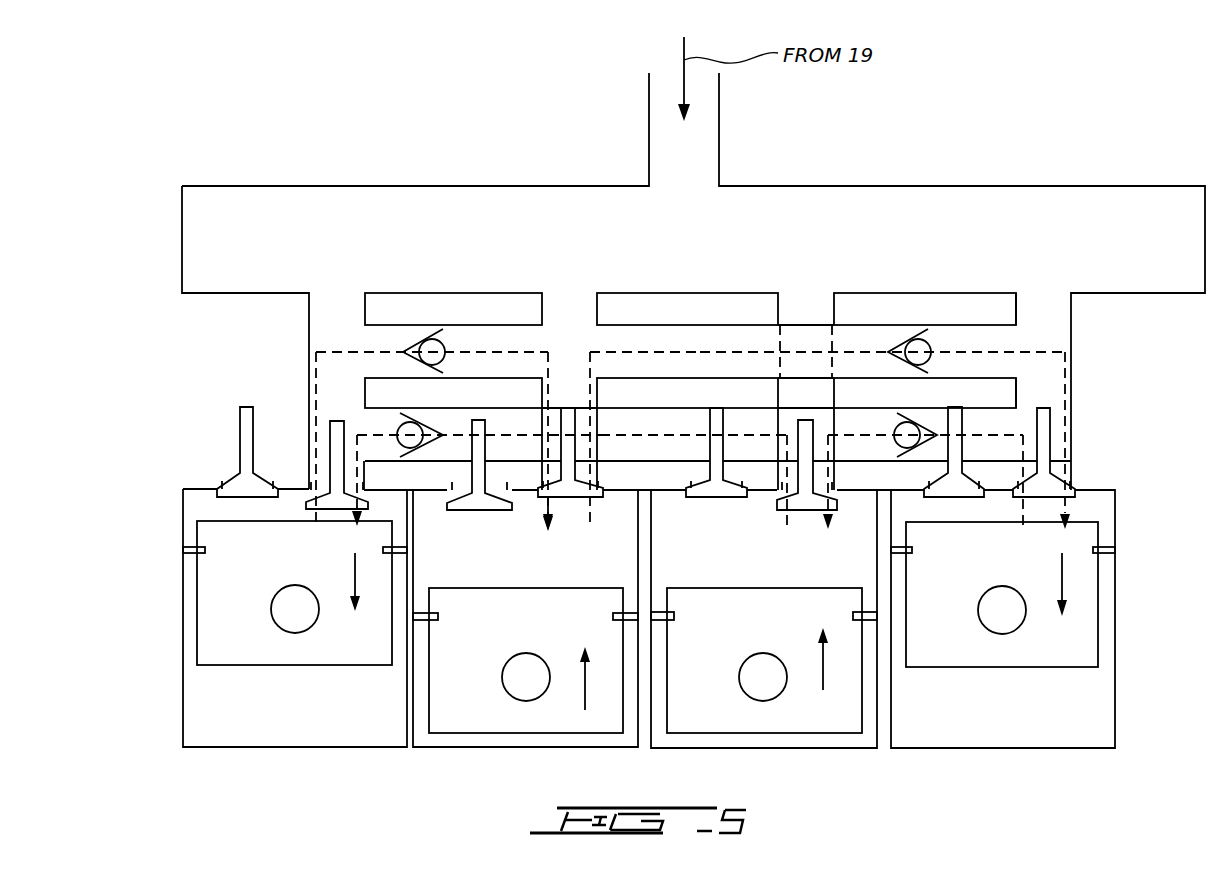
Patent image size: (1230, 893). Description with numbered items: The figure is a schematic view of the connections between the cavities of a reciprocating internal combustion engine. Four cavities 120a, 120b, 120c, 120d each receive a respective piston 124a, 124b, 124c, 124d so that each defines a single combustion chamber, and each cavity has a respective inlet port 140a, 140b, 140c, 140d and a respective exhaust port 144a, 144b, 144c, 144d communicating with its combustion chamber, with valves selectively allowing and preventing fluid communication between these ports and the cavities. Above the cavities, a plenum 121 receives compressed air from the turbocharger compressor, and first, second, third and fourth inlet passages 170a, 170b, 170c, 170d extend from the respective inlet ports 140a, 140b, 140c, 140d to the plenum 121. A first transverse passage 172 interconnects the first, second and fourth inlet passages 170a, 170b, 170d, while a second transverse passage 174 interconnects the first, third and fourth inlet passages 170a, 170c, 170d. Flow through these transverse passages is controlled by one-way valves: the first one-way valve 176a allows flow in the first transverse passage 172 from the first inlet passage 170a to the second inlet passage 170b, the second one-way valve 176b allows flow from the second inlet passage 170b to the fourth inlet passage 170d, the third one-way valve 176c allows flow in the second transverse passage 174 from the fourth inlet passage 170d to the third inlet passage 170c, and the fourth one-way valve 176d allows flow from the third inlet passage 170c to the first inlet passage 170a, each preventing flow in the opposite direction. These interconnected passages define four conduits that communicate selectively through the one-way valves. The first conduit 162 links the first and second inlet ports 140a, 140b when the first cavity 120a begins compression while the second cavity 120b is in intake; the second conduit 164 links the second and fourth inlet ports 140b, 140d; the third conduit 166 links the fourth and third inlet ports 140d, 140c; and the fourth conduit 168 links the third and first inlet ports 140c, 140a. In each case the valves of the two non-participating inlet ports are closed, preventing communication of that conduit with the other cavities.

The plenum 121 is at (716, 248).
The first inlet passage 170a is at (330, 303).
The second inlet passage 170b is at (569, 303).
The third inlet passage 170c is at (806, 303).
The fourth inlet passage 170d is at (1044, 303).
The first transverse passage 172 is at (985, 340).
The second transverse passage 174 is at (999, 422).
The first conduit 162 is at (317, 440).
The second conduit 164 is at (633, 352).
The third conduit 166 is at (870, 437).
The fourth conduit 168 is at (650, 435).
The first one-way valve 176a is at (432, 340).
The second one-way valve 176b is at (918, 340).
The third one-way valve 176c is at (910, 428).
The fourth one-way valve 176d is at (400, 430).
The first inlet port 140a is at (317, 488).
The second inlet port 140b is at (585, 478).
The third inlet port 140c is at (820, 487).
The fourth inlet port 140d is at (1070, 482).
The first exhaust port 144a is at (222, 484).
The second exhaust port 144b is at (462, 487).
The third exhaust port 144c is at (690, 487).
The fourth exhaust port 144d is at (977, 483).
The first cavity 120a is at (248, 512).
The second cavity 120b is at (548, 568).
The third cavity 120c is at (785, 568).
The fourth cavity 120d is at (1000, 510).
The first piston 124a is at (259, 655).
The second piston 124b is at (491, 725).
The third piston 124c is at (729, 725).
The fourth piston 124d is at (967, 658).